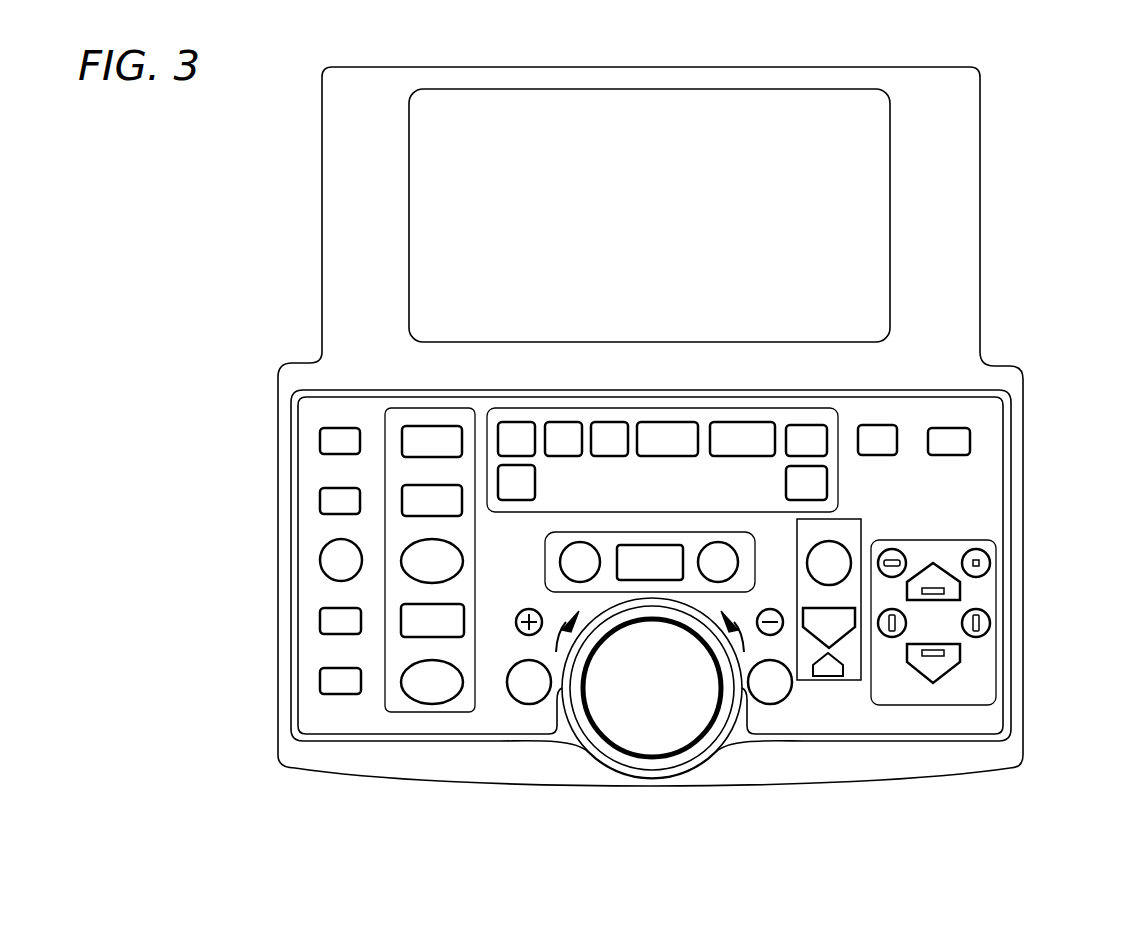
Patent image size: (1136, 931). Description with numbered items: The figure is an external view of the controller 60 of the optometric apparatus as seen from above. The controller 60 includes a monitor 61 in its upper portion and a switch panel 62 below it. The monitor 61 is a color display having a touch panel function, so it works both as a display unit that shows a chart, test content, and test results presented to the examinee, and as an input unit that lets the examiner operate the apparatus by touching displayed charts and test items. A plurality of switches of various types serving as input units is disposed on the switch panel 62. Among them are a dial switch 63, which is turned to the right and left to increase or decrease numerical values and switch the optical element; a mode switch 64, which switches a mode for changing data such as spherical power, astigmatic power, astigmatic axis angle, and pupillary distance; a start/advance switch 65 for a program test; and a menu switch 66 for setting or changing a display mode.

The controller 60 is at (189, 203).
The monitor 61 is at (455, 184).
The switch panel 62 is at (963, 507).
The dial switch 63 is at (657, 713).
The mode switch 64 is at (530, 510).
The start/advance switch 65 is at (840, 682).
The menu switch 66 is at (897, 425).